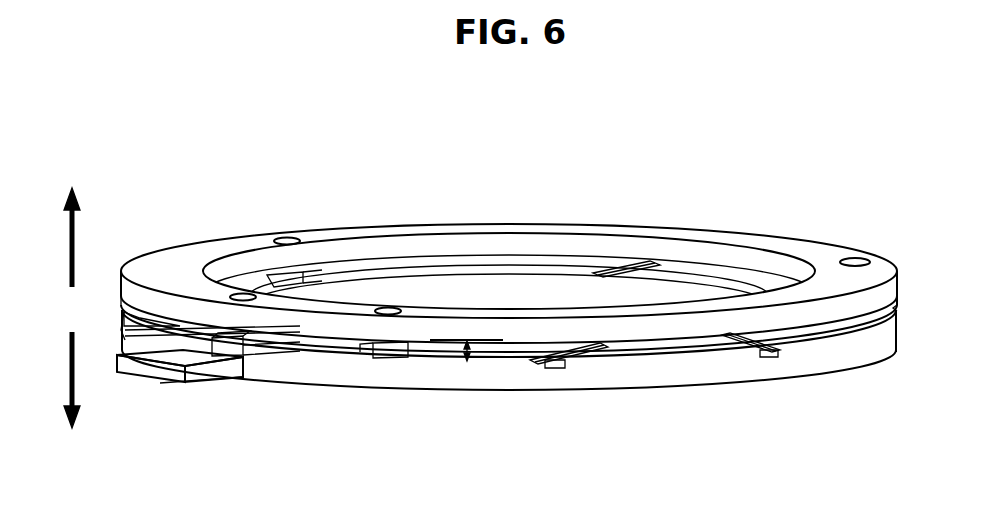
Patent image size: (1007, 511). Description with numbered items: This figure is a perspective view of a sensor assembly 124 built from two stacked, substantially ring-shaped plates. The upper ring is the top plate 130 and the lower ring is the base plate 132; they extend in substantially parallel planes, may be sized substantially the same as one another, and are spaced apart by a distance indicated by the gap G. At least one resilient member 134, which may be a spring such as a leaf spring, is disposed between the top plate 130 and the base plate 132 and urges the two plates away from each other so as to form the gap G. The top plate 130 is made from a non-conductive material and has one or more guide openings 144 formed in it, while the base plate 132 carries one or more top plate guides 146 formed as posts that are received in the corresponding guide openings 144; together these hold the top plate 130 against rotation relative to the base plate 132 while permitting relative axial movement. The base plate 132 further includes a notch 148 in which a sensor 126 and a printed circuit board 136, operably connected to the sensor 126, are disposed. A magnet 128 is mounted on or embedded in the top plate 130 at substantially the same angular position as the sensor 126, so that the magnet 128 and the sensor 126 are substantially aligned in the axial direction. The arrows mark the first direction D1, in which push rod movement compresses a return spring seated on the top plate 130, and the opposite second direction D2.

The sensor assembly 124 is at (392, 170).
The sensor 126 is at (165, 366).
The magnet 128 is at (243, 265).
The top plate 130 is at (815, 240).
The base plate 132 is at (870, 350).
The resilient member 134 is at (626, 262).
The printed circuit board 136 is at (208, 383).
The guide openings 144 is at (388, 308).
The top plate guides 146 is at (288, 272).
The notch 148 is at (258, 362).
The gap G is at (463, 364).
The first direction D1 is at (56, 380).
The second direction D2 is at (56, 237).